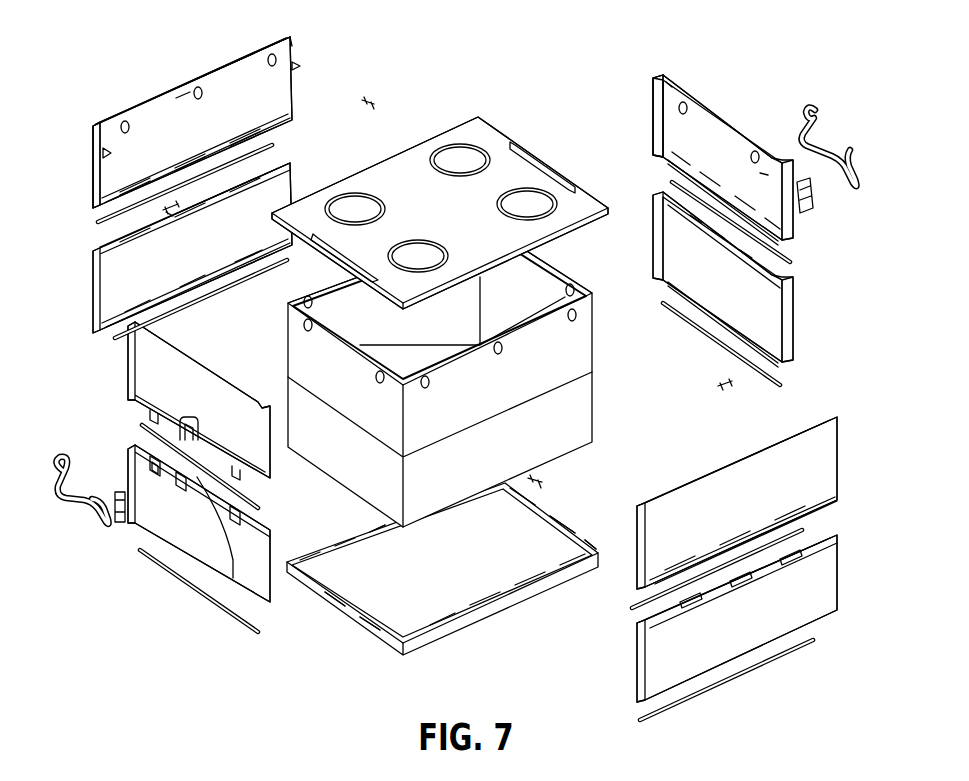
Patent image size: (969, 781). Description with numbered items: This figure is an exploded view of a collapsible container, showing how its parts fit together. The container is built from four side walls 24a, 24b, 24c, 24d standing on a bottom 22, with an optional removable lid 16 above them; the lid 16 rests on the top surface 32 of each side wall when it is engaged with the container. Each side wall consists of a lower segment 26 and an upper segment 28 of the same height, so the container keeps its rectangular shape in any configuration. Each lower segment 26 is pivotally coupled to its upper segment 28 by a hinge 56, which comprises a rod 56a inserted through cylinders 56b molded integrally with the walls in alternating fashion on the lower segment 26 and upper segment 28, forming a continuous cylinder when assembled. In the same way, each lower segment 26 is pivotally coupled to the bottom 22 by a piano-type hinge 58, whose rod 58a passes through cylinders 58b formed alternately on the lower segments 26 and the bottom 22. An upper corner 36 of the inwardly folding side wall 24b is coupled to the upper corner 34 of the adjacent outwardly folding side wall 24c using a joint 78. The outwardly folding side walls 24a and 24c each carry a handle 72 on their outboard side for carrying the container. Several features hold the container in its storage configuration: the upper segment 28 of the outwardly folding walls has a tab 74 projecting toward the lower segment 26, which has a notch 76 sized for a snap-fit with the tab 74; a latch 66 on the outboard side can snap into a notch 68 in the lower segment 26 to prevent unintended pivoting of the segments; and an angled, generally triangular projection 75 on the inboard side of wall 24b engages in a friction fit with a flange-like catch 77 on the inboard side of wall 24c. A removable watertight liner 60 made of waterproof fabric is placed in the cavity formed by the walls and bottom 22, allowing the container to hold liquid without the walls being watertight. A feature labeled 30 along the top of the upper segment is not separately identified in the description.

The lid 16 is at (405, 162).
The bottom 22 is at (418, 605).
The side wall 24a is at (165, 588).
The side wall 24b is at (150, 72).
The side wall 24c is at (735, 96).
The side wall 24d is at (745, 690).
The lower segment 26 is at (125, 275).
The upper segment 28 is at (125, 172).
The top edge 30 is at (248, 57).
The top surface 32 is at (183, 90).
The upper corner 34 is at (105, 124).
The upper corner 36 is at (296, 44).
The hinge 56 is at (262, 507).
The rod 56a is at (270, 160).
The cylinders 56b is at (237, 187).
The hinge 58 is at (778, 383).
The rod 58a is at (230, 292).
The cylinders 58b is at (207, 282).
The watertight liner 60 is at (578, 408).
The latch 66 is at (123, 532).
The notch 68 is at (198, 477).
The handle 72 is at (72, 524).
The tab 74 is at (140, 416).
The angled projection 75 is at (300, 67).
The notch 76 is at (152, 463).
The catch 77 is at (670, 112).
The joint 78 is at (160, 212).